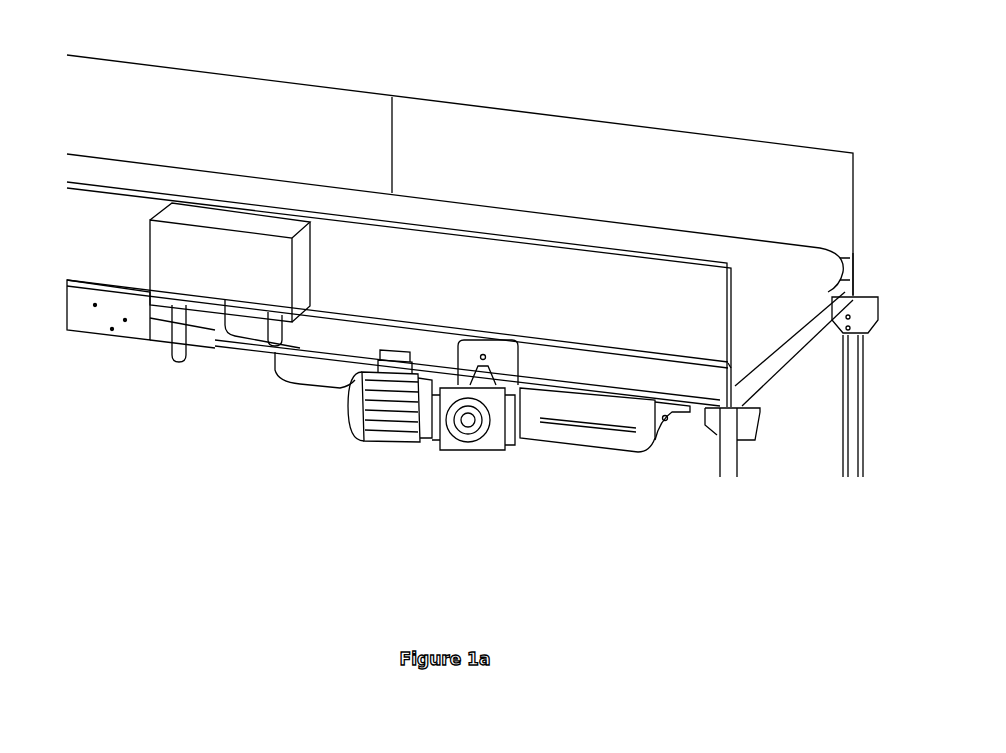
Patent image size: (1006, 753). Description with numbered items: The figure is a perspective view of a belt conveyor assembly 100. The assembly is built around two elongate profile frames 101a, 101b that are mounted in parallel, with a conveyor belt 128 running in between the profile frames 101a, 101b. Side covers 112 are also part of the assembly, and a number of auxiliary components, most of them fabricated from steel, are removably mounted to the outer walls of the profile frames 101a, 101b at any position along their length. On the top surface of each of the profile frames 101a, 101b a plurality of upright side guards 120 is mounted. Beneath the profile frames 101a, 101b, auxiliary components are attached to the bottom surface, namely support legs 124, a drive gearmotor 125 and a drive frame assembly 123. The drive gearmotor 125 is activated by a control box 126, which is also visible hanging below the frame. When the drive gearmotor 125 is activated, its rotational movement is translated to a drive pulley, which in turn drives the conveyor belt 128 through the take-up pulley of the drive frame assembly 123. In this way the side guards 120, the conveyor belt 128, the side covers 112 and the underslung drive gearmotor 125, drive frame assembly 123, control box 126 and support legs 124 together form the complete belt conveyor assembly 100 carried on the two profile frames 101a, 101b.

The belt conveyor assembly 100 is at (297, 458).
The profile frame 101a is at (717, 390).
The profile frame 101b is at (843, 287).
The side covers 112 is at (633, 378).
The upright side guards 120 is at (556, 173).
The drive frame assembly 123 is at (568, 425).
The support legs 124 is at (843, 407).
The drive gearmotor 125 is at (393, 447).
The control box 126 is at (185, 280).
The conveyor belt 128 is at (749, 300).